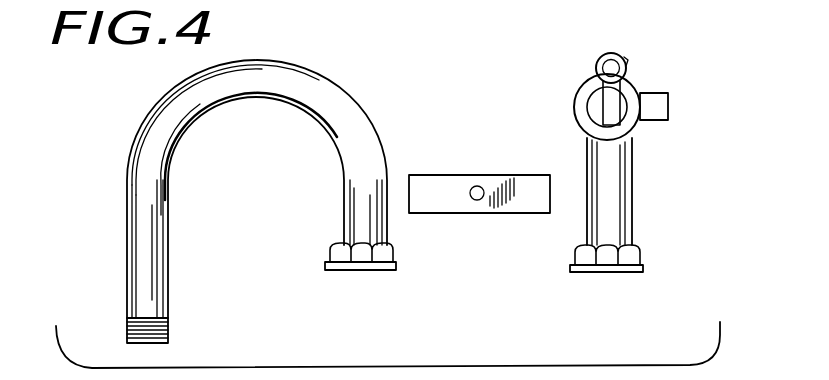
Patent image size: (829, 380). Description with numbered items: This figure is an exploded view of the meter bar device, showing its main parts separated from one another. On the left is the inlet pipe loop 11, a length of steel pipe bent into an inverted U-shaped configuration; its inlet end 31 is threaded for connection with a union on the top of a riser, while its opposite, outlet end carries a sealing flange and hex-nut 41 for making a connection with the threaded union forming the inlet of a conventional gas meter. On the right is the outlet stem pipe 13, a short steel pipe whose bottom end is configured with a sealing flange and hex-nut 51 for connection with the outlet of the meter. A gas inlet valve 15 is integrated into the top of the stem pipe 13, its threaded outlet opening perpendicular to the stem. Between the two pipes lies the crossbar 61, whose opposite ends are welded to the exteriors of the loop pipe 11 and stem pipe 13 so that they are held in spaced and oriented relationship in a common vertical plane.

The inlet pipe loop 11 is at (352, 106).
The outlet stem pipe 13 is at (633, 193).
The gas inlet valve 15 is at (631, 77).
The inlet end 31 is at (155, 345).
The hex-nut 41 is at (333, 254).
The hex-nut 51 is at (641, 253).
The crossbar 61 is at (440, 173).